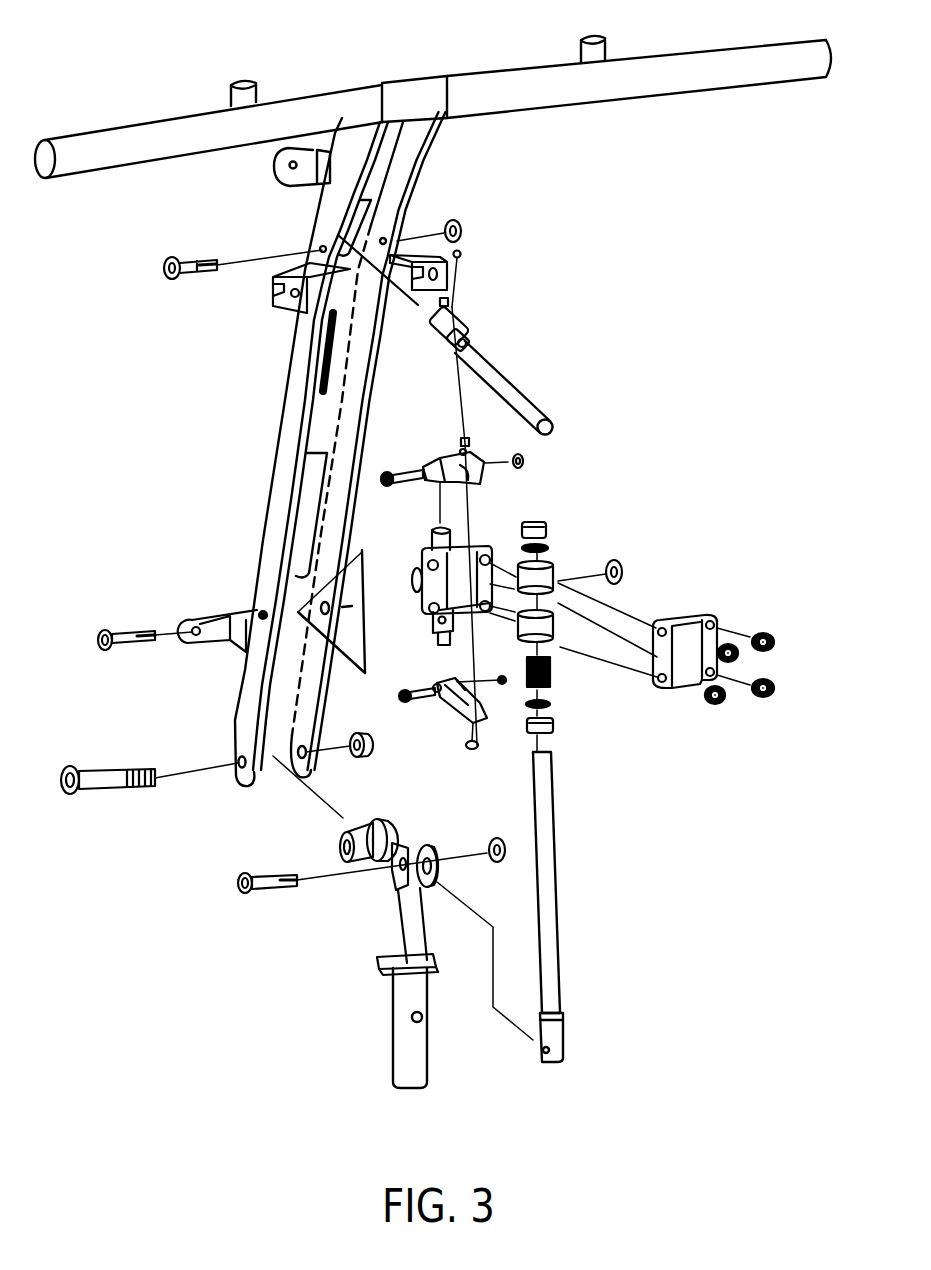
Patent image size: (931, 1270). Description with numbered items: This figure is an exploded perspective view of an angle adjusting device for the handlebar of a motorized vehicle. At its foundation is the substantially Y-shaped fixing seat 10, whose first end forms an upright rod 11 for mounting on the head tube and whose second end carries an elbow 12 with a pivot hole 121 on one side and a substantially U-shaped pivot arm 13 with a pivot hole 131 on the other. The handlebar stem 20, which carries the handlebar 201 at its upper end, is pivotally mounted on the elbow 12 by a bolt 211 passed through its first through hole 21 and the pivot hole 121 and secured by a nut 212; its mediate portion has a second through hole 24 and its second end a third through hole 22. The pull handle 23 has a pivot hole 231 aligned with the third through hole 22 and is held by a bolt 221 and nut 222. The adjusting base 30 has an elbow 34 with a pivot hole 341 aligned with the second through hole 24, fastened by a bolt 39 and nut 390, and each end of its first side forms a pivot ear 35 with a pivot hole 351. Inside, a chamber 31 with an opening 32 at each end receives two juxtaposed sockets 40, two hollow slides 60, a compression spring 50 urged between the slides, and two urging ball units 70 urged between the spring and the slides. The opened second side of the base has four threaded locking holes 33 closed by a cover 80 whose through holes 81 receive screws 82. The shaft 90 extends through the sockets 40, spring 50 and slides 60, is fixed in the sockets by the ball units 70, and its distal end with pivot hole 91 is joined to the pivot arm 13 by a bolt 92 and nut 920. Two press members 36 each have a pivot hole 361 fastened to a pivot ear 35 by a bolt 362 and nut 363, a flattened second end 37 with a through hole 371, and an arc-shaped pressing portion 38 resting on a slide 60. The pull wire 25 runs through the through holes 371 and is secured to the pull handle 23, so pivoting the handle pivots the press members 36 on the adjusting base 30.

The fixing seat 10 is at (341, 1011).
The upright rod 11 is at (400, 1028).
The elbow 12 is at (400, 872).
The pivot arm 13 is at (400, 897).
The handlebar stem 20 is at (277, 517).
The first through hole 21 is at (243, 756).
The third through hole 22 is at (322, 249).
The pull handle 23 is at (508, 390).
The second through hole 24 is at (263, 615).
The pull wire 25 is at (458, 288).
The adjusting base 30 is at (423, 600).
The chamber 31 is at (458, 590).
The opening 32 is at (461, 545).
The threaded locking hole 33 is at (433, 622).
The elbow 34 is at (418, 598).
The pivot ear 35 is at (450, 626).
The press member 36 is at (465, 477).
The flattened second end 37 is at (467, 458).
The arc-shaped pressing portion 38 is at (436, 688).
The bolt 39 is at (118, 630).
The socket 40 is at (547, 587).
The compression spring 50 is at (550, 682).
The slide 60 is at (545, 527).
The urging ball unit 70 is at (548, 549).
The cover 80 is at (685, 627).
The through hole 81 is at (712, 622).
The screw 82 is at (764, 640).
The shaft 90 is at (550, 847).
The pivot hole 91 is at (548, 1052).
The bolt 92 is at (250, 877).
The pivot hole 121 is at (342, 846).
The pivot hole 131 is at (435, 847).
The handlebar 201 is at (283, 120).
The bolt 211 is at (105, 775).
The nut 212 is at (356, 760).
The bolt 221 is at (176, 282).
The nut 222 is at (463, 227).
The pivot hole 231 is at (470, 342).
The pivot hole 341 is at (416, 571).
The pivot hole 351 is at (437, 645).
The pivot hole 361 is at (433, 465).
The bolt 362 is at (388, 486).
The nut 363 is at (528, 461).
The through hole 371 is at (461, 451).
The nut 390 is at (622, 570).
The nut 920 is at (504, 862).